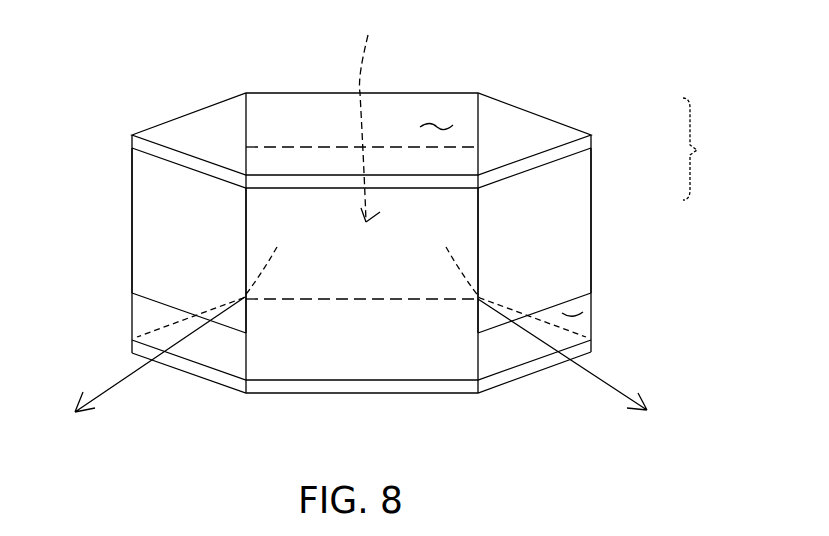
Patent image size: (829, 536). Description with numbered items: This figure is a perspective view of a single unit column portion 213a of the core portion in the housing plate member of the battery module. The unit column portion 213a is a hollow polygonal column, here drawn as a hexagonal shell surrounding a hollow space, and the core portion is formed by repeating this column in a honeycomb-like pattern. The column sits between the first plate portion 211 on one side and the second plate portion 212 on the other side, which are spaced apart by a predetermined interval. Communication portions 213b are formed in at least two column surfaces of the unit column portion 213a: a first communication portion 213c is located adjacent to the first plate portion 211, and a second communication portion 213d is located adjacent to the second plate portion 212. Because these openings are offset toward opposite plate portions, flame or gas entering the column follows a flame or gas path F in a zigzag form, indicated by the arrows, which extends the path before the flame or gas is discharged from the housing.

The first plate portion 211 is at (188, 160).
The second plate portion 212 is at (163, 337).
The unit column portion 213a is at (167, 232).
The communication portions 213b is at (716, 149).
The first communication portion 213c is at (442, 124).
The second communication portion 213d is at (572, 310).
The flame or gas path F is at (128, 373).